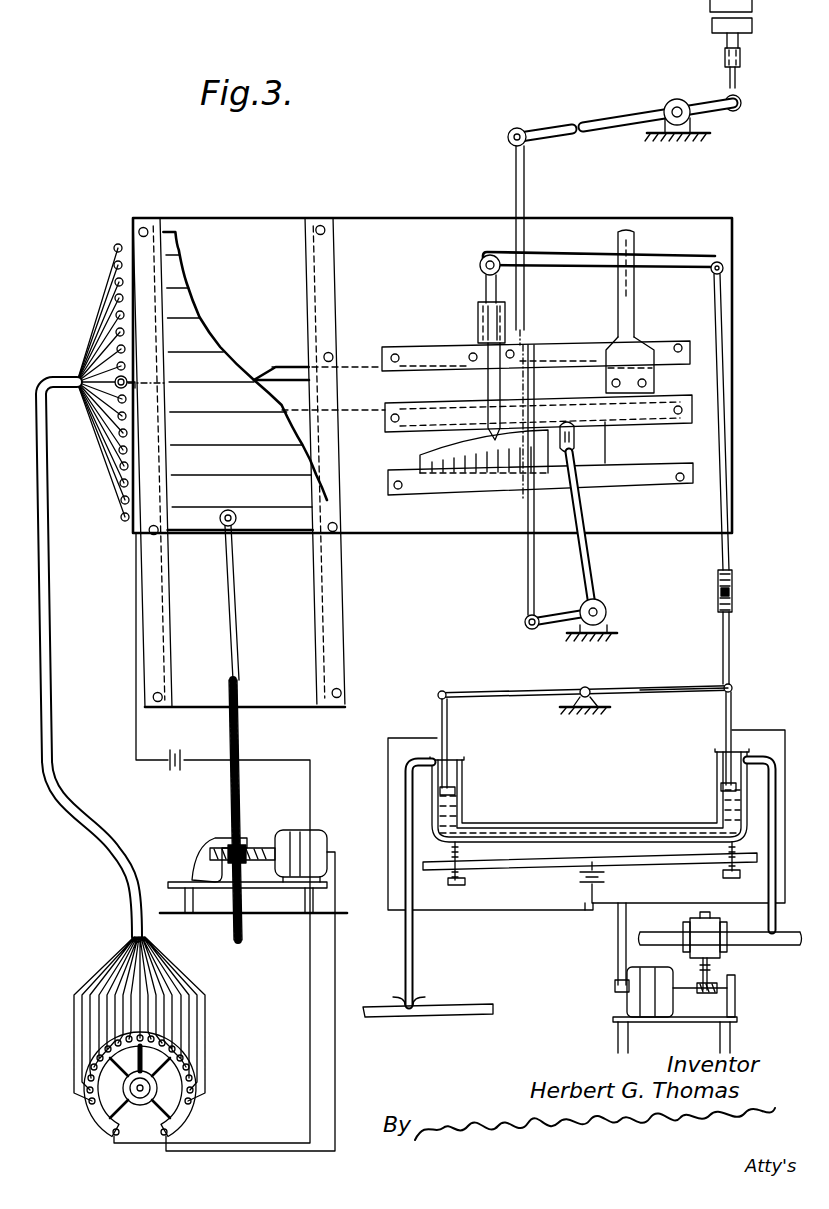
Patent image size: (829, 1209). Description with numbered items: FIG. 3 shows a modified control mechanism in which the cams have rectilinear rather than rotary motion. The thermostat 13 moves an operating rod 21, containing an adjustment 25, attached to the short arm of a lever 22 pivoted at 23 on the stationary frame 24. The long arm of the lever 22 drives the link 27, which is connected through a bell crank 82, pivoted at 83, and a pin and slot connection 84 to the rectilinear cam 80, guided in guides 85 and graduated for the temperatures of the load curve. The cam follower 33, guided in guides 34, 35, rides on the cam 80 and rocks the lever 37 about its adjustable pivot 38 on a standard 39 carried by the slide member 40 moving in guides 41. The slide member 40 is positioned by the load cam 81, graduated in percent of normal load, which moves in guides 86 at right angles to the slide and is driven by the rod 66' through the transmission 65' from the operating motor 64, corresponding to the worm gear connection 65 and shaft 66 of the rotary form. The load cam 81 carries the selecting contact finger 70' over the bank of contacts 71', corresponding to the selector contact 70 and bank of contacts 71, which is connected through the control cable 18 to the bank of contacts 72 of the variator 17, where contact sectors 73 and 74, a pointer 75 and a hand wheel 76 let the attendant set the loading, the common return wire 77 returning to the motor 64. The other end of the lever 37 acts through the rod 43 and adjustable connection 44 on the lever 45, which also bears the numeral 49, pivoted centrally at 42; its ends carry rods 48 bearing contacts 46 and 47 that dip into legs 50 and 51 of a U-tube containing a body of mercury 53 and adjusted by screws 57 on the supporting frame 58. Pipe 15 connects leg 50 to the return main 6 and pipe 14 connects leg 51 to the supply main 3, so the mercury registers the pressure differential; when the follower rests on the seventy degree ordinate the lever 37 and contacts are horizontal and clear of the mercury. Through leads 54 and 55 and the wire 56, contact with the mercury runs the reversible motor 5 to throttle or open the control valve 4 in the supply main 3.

The supply main 3 is at (762, 945).
The control valve 4 is at (712, 925).
The reversible motor 5 is at (627, 1000).
The return main 6 is at (463, 1005).
The thermostat 13 is at (700, 14).
The pressure conveying tube 14 is at (776, 897).
The pressure conveying tube 15 is at (414, 937).
The variator 17 is at (208, 1023).
The control cable 18 is at (84, 820).
The operating rod 21 is at (742, 98).
The lever 22 is at (616, 116).
The pivot 23 is at (680, 100).
The stationary frame 24 is at (732, 225).
The adjustment 25 is at (742, 62).
The link 27 is at (524, 165).
The cam follower 33 is at (485, 289).
The guide 34 is at (478, 323).
The guide 35 is at (492, 430).
The lever 37 is at (578, 255).
The adjustable pivot 38 is at (634, 245).
The standard 39 is at (634, 310).
The slide member 40 is at (382, 357).
The guides 41 is at (408, 346).
The pivot 42 is at (588, 687).
The rod 43 is at (730, 450).
The adjustable connection 44 is at (733, 585).
The lever 45 is at (670, 670).
The contact member 46 is at (456, 790).
The contact member 47 is at (720, 786).
The rods 48 is at (448, 716).
The beam 49 is at (510, 687).
The leg or chamber 50 is at (463, 765).
The leg or chamber 51 is at (716, 758).
The body of mercury 53 is at (540, 835).
The lead 54 is at (400, 738).
The lead 55 is at (762, 730).
The wire 56 is at (594, 895).
The adjusting screws 57 is at (468, 883).
The supporting frame 58 is at (553, 865).
The operating motor 64 is at (293, 830).
The transmission 65' is at (230, 837).
The worm gear connection 65 is at (230, 837).
The rod 66' is at (254, 733).
The shaft 66 is at (254, 733).
The selecting contact finger 70' is at (96, 416).
The selector contact 70 is at (96, 416).
The bank of contacts 71' is at (92, 382).
The bank of contacts 71 is at (92, 382).
The bank of contacts 72 is at (68, 1084).
The contact sector 73 is at (100, 1128).
The contact sector 74 is at (192, 1112).
The pointer 75 is at (127, 1066).
The hand wheel 76 is at (143, 1105).
The common return wire 77 is at (134, 692).
The rectilinear cam 80 is at (594, 455).
The cam 81 is at (305, 516).
The bell crank 82 is at (585, 565).
The pivot 83 is at (606, 612).
The pin and slot connection 84 is at (575, 438).
The guides 85 is at (418, 458).
The guides 86 is at (160, 608).